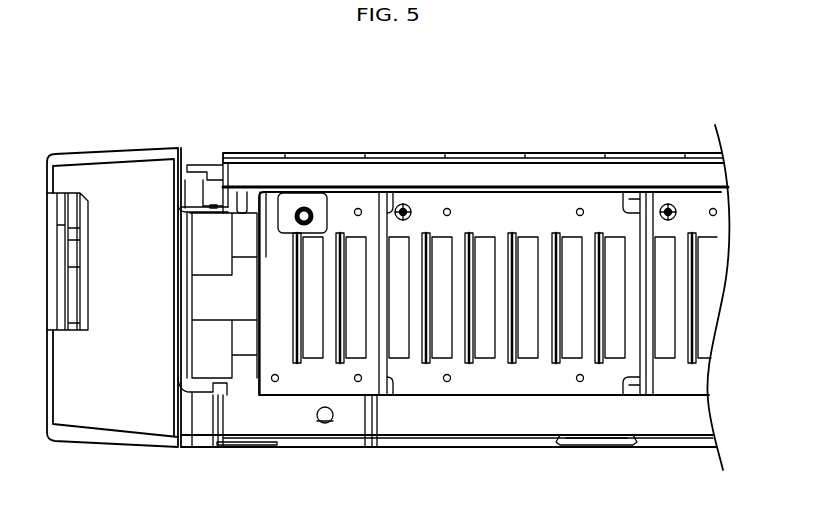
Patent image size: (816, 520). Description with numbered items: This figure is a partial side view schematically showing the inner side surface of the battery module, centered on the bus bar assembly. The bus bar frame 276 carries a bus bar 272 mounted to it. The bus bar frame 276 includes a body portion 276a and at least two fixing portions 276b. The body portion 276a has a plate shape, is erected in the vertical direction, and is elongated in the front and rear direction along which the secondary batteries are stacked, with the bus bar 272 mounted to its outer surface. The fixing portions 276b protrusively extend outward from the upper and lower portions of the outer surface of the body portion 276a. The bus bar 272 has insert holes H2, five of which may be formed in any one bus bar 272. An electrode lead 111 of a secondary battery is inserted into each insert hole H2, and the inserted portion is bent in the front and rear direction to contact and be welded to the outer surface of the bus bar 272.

The bus bar frame 276 is at (218, 103).
The body portion 276a is at (260, 176).
The fixing portion 276b is at (308, 181).
The bus bar 272 is at (343, 210).
The electrode lead 111 is at (353, 340).
The insert hole H2 is at (290, 290).